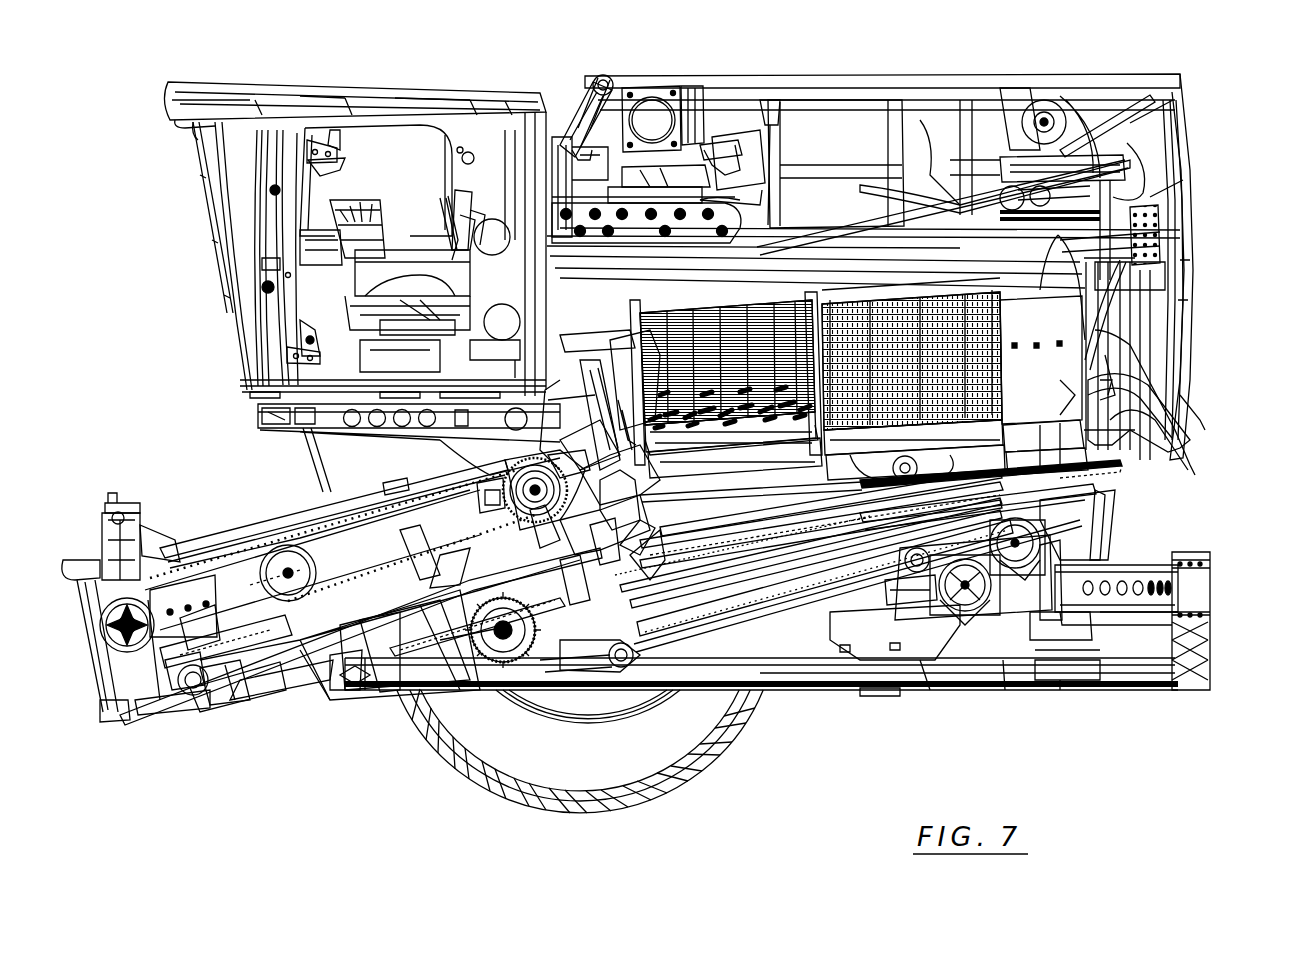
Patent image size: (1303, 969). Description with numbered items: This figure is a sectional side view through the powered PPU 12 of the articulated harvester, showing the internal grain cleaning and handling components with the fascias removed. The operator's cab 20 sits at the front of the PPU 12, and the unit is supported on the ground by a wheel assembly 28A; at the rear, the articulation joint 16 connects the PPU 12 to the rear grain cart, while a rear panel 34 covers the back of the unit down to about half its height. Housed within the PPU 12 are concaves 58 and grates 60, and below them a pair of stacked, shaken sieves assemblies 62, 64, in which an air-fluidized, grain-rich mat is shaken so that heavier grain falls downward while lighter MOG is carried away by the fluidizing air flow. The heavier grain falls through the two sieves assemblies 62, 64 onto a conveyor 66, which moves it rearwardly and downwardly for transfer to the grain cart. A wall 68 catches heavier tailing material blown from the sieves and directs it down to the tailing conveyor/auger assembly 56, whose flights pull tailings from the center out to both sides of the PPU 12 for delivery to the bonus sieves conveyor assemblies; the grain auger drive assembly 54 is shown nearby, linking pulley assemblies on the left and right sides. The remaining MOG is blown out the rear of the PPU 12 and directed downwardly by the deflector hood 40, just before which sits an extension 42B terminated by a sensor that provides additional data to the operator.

The powered PPU 12 is at (232, 46).
The operator's cab 20 is at (400, 75).
The concaves 58 is at (742, 322).
The grates 60 is at (852, 318).
The rear panel 34 is at (1192, 222).
The deflector 40 is at (1192, 442).
The extension 42B is at (1128, 463).
The wall 68 is at (1092, 514).
The conveyor 66 is at (672, 615).
The sieves assembly 62 is at (783, 548).
The sieves assembly 64 is at (762, 548).
The grain auger drive assembly 54 is at (970, 605).
The conveyor/auger assembly 56 is at (1010, 570).
The articulation joint 16 is at (1080, 727).
The wheel assembly 28A is at (503, 758).